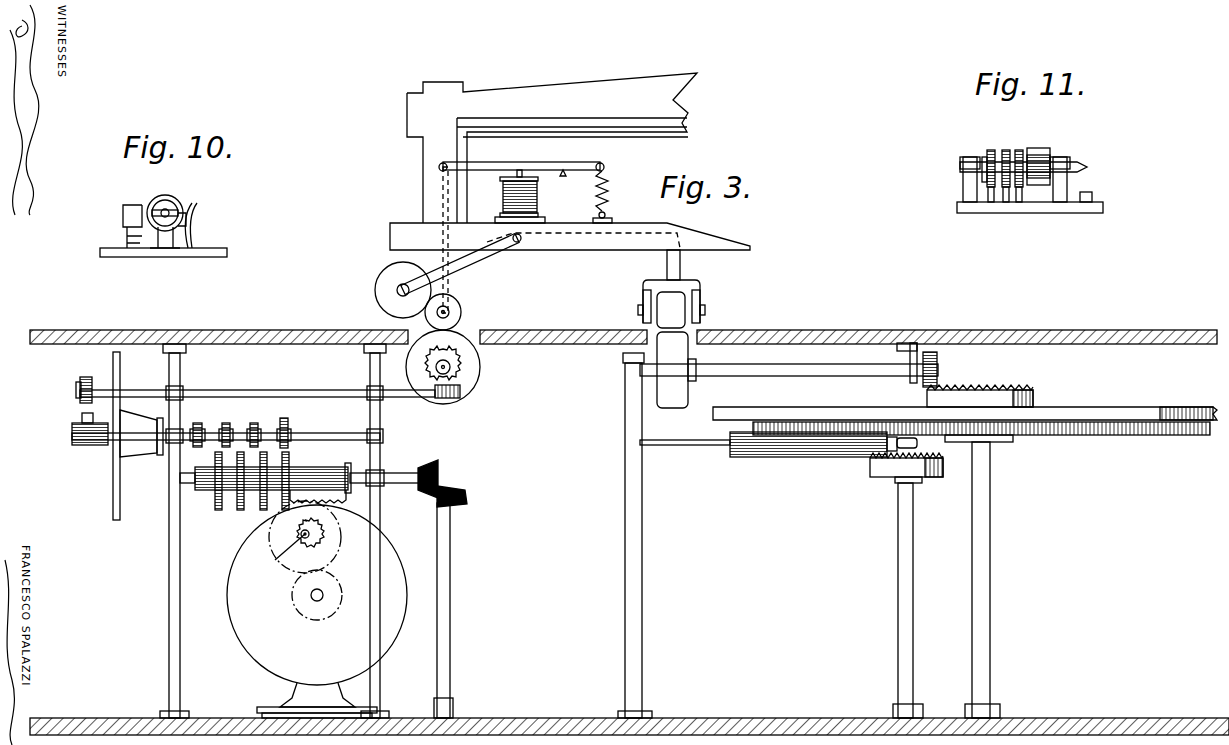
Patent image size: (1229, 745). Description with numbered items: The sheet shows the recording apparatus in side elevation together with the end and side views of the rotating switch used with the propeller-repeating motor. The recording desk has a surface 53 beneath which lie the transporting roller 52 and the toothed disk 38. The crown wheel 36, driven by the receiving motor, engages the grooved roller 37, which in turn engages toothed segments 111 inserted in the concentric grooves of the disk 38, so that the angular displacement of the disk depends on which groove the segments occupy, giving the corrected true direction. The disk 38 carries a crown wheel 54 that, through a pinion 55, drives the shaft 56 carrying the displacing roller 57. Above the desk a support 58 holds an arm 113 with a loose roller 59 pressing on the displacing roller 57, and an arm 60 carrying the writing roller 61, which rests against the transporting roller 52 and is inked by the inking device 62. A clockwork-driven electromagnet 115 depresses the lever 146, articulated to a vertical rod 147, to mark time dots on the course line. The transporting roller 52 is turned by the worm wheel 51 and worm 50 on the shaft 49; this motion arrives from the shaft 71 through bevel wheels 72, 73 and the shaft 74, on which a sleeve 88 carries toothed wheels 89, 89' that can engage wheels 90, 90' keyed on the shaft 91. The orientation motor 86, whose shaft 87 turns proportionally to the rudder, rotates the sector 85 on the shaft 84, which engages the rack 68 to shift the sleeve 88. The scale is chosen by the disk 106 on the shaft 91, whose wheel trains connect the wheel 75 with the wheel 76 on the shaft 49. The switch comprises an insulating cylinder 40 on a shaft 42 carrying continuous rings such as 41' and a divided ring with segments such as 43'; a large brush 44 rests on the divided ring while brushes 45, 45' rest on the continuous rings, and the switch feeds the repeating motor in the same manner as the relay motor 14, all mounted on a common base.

In FIG. 3, the desk surface 53 is at (268, 325).
In FIG. 3, the support 58 is at (552, 148).
In FIG. 3, the lever 146 is at (558, 157).
In FIG. 3, the electromagnet 115 is at (538, 196).
In FIG. 3, the vertical rod 147 is at (440, 258).
In FIG. 3, the inking device 62 is at (375, 279).
In FIG. 3, the arm 60 is at (480, 262).
In FIG. 3, the writing roller 61 is at (463, 312).
In FIG. 3, the arm 113 is at (680, 266).
In FIG. 3, the loose roller 59 is at (690, 298).
In FIG. 3, the displacing roller 57 is at (696, 352).
In FIG. 3, the shaft 56 is at (832, 368).
In FIG. 3, the pinion 55 is at (940, 353).
In FIG. 3, the crown wheel 54 is at (1025, 390).
In FIG. 3, the toothed disk 38 is at (770, 407).
In FIG. 3, the toothed segments 111 is at (1147, 436).
In FIG. 3, the grooved roller 37 is at (776, 458).
In FIG. 3, the crown wheel 36 is at (873, 480).
In FIG. 3, the wheel 76 is at (85, 378).
In FIG. 3, the shaft 49 is at (307, 390).
In FIG. 3, the toothed wheel 90' is at (262, 420).
In FIG. 3, the toothed wheel 90 is at (292, 420).
In FIG. 3, the shaft 91 is at (328, 433).
In FIG. 3, the sleeve 88 is at (332, 467).
In FIG. 3, the shaft 74 is at (390, 473).
In FIG. 3, the bevel wheel 73 is at (435, 462).
In FIG. 3, the bevel wheel 72 is at (462, 488).
In FIG. 3, the rack 68 is at (344, 487).
In FIG. 3, the sector 85 is at (305, 537).
In FIG. 3, the toothed wheel 89' is at (251, 493).
In FIG. 3, the toothed wheel 89 is at (279, 496).
In FIG. 3, the shaft 84 is at (276, 554).
In FIG. 3, the shaft 87 is at (323, 591).
In FIG. 3, the shaft 71 is at (450, 580).
In FIG. 3, the orientation motor 86 is at (317, 611).
In FIG. 3, the wheel 75 is at (86, 448).
In FIG. 3, the disk 106 is at (112, 507).
In FIG. 3, the worm wheel 51 is at (462, 365).
In FIG. 3, the transporting roller 52 is at (477, 383).
In FIG. 3, the worm 50 is at (437, 398).
In FIG. 10, the insulating cylinder 40 is at (172, 198).
In FIG. 11, the insulating cylinder 40 is at (1052, 155).
In FIG. 10, the ring segment 43' is at (110, 234).
In FIG. 11, the ring segment 43' is at (1033, 152).
In FIG. 10, the brush 44 is at (123, 213).
In FIG. 10, the brush 45 is at (214, 225).
In FIG. 11, the continuous metallic ring 41' is at (1034, 154).
In FIG. 11, the shaft 42 is at (1090, 167).
In FIG. 11, the brush 45' is at (1036, 209).
In FIG. 11, the motor 14 is at (1035, 205).